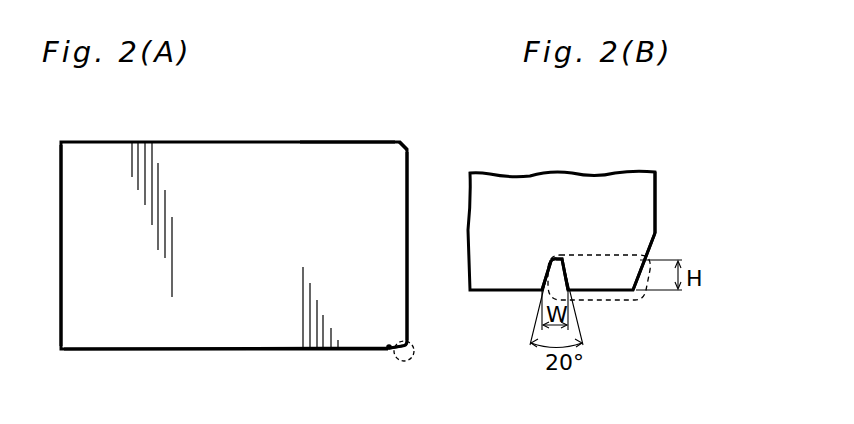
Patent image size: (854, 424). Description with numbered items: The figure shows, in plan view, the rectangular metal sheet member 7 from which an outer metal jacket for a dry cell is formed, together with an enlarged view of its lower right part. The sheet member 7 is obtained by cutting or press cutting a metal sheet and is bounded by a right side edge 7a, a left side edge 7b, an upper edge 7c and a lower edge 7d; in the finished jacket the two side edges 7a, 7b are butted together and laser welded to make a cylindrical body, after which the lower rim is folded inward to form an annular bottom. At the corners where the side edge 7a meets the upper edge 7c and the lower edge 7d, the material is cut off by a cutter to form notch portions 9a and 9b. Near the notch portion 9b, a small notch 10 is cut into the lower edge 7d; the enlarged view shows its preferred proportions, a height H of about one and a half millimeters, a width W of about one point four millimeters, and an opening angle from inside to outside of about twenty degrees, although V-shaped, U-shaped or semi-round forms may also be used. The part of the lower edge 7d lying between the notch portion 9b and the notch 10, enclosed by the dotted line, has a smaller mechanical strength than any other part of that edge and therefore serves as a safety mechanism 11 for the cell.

In FIG. 2A, the rectangular metal sheet member 7 is at (296, 148).
In FIG. 2B, the rectangular metal sheet member 7 is at (585, 183).
In FIG. 2A, the side edge 7a is at (408, 250).
In FIG. 2B, the side edge 7a is at (656, 190).
In FIG. 2A, the side edge 7b is at (61, 293).
In FIG. 2A, the upper edge 7c is at (338, 143).
In FIG. 2A, the lower edge 7d is at (262, 350).
In FIG. 2A, the notch portion 9a is at (404, 145).
In FIG. 2A, the notch portion 9b is at (410, 347).
In FIG. 2B, the notch portion 9b is at (650, 248).
In FIG. 2A, the notch 10 is at (388, 351).
In FIG. 2B, the notch 10 is at (541, 283).
In FIG. 2A, the safety mechanism 11 is at (410, 358).
In FIG. 2B, the safety mechanism 11 is at (632, 300).